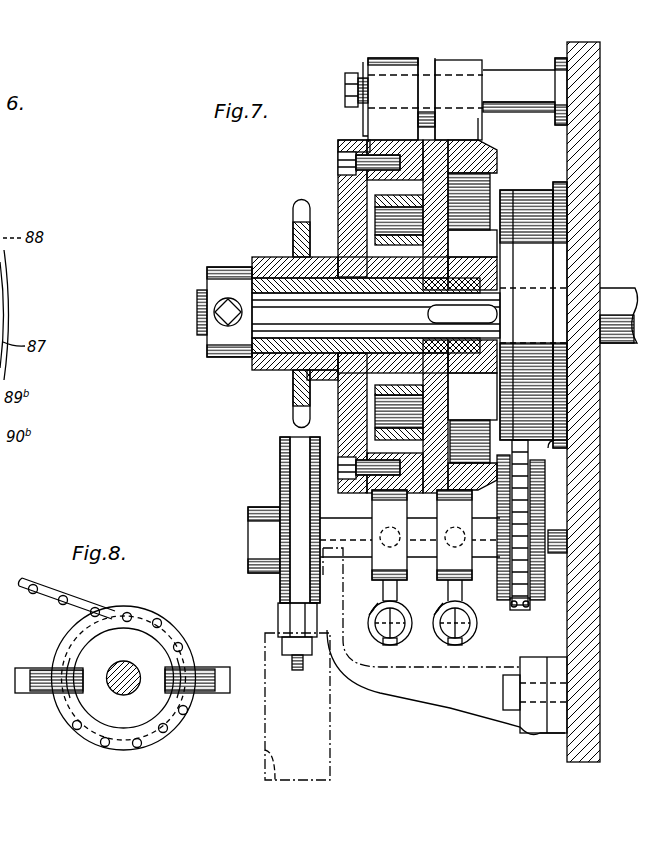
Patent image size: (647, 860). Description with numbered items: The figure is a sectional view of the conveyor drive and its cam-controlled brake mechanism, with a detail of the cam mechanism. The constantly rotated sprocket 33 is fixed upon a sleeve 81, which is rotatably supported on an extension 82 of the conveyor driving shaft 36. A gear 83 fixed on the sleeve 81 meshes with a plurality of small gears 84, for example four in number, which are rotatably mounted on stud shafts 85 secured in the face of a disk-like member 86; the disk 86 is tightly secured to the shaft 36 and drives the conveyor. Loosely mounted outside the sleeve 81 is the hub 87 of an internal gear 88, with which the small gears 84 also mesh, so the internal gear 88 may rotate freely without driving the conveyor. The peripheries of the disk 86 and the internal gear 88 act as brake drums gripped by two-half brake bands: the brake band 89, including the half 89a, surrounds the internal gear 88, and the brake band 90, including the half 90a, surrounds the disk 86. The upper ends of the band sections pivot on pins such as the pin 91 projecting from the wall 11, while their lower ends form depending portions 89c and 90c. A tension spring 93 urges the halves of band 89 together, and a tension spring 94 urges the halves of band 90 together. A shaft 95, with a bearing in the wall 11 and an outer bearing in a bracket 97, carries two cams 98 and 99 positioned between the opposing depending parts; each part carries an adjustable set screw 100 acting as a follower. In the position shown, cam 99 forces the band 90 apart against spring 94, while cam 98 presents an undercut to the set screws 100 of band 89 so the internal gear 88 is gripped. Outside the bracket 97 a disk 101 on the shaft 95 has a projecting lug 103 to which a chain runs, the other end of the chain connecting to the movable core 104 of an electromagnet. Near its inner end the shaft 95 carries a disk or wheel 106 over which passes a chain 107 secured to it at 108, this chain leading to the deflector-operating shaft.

In FIG. 7, the wall 11 is at (587, 193).
In FIG. 7, the constantly rotated sprocket 33 is at (293, 237).
In FIG. 7, the conveyor driving shaft 36 is at (612, 290).
In FIG. 7, the sleeve 81 is at (270, 260).
In FIG. 7, the extension of the shaft 82 is at (206, 301).
In FIG. 7, the gear 83 is at (390, 356).
In FIG. 7, the small gears 84 is at (350, 188).
In FIG. 7, the stud shafts 85 is at (382, 216).
In FIG. 7, the disk-like member 86 is at (492, 180).
In FIG. 7, the hub 87 is at (296, 383).
In FIG. 7, the internal gear 88 is at (338, 151).
In FIG. 7, the brake band 89 is at (398, 75).
In FIG. 7, the brake band half 89a is at (409, 99).
In FIG. 7, the depending portion 89c is at (392, 641).
In FIG. 7, the brake band 90 is at (456, 68).
In FIG. 7, the brake band half 90a is at (478, 127).
In FIG. 7, the depending portion 90c is at (455, 643).
In FIG. 7, the pin 91 is at (518, 86).
In FIG. 7, the tension spring 93 is at (383, 646).
In FIG. 7, the tension spring 94 is at (449, 642).
In FIG. 7, the shaft 95 is at (413, 562).
In FIG. 8, the shaft 95 is at (133, 664).
In FIG. 7, the bracket 97 is at (472, 706).
In FIG. 7, the cam 98 is at (389, 535).
In FIG. 8, the cam 98 is at (133, 712).
In FIG. 7, the cam 99 is at (454, 535).
In FIG. 8, the cam 99 is at (80, 702).
In FIG. 7, the adjustable set screw 100 is at (372, 542).
In FIG. 8, the adjustable set screw 100 is at (47, 672).
In FIG. 7, the disk 101 is at (282, 586).
In FIG. 7, the projecting lug 103 is at (283, 634).
In FIG. 7, the movable core 104 is at (297, 718).
In FIG. 7, the disk or wheel 106 is at (546, 569).
In FIG. 8, the disk or wheel 106 is at (178, 722).
In FIG. 7, the chain 107 is at (527, 490).
In FIG. 8, the chain 107 is at (75, 605).
In FIG. 7, the chain securing point 108 is at (516, 611).